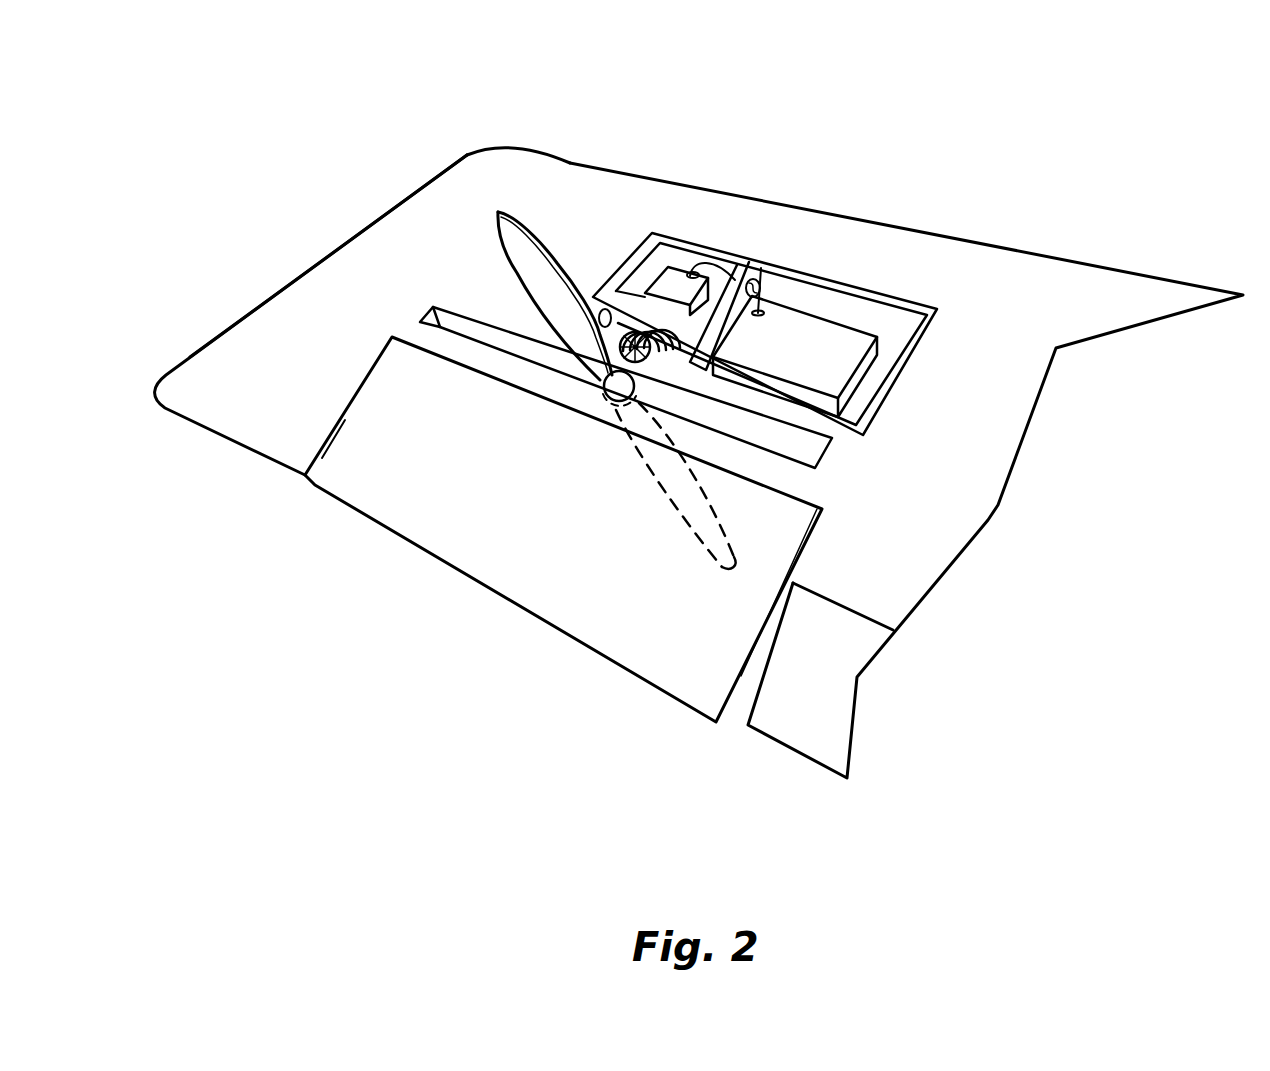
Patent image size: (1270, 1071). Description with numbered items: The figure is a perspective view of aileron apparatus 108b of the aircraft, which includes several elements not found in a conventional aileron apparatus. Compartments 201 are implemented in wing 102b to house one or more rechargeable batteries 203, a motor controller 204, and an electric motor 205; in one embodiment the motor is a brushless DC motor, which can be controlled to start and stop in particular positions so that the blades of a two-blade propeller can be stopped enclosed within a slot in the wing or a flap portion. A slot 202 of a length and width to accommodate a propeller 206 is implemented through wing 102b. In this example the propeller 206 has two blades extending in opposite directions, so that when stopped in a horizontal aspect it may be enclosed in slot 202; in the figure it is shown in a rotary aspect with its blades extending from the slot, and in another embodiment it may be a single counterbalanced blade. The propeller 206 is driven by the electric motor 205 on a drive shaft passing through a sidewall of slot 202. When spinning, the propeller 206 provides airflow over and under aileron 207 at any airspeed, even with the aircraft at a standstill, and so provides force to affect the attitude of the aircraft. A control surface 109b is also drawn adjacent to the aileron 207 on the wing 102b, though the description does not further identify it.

The aileron apparatus 108b is at (1010, 136).
The wing 102b is at (427, 220).
The control surface 109b is at (817, 698).
The compartments 201 is at (695, 243).
The slot 202 is at (482, 322).
The rechargeable batteries 203 is at (833, 340).
The motor controller 204 is at (673, 280).
The electric motor 205 is at (634, 295).
The propeller 206 is at (508, 210).
The aileron 207 is at (380, 410).